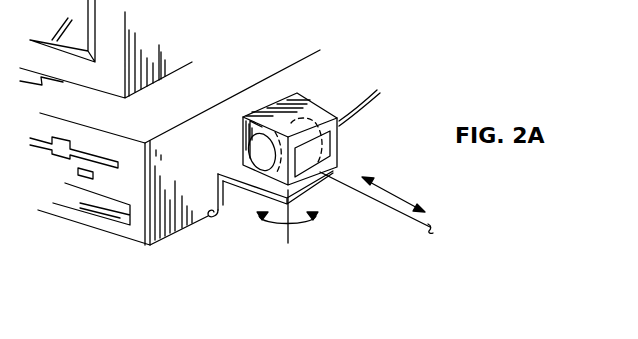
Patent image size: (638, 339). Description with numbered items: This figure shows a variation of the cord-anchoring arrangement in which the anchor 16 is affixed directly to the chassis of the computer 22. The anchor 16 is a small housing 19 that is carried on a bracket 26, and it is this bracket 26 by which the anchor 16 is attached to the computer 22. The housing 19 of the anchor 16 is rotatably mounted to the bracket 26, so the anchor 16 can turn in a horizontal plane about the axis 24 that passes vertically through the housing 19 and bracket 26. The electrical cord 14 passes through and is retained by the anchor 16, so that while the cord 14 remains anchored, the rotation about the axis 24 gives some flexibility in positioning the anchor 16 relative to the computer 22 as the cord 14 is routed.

The electrical cord 14 is at (376, 95).
The anchor 16 is at (313, 90).
The housing 19 is at (336, 139).
The computer 22 is at (138, 241).
The axis 24 is at (288, 238).
The bracket 26 is at (235, 186).